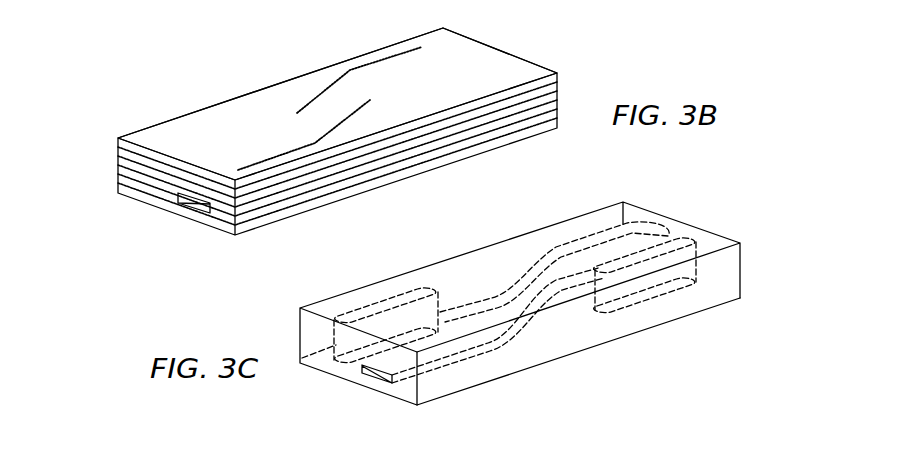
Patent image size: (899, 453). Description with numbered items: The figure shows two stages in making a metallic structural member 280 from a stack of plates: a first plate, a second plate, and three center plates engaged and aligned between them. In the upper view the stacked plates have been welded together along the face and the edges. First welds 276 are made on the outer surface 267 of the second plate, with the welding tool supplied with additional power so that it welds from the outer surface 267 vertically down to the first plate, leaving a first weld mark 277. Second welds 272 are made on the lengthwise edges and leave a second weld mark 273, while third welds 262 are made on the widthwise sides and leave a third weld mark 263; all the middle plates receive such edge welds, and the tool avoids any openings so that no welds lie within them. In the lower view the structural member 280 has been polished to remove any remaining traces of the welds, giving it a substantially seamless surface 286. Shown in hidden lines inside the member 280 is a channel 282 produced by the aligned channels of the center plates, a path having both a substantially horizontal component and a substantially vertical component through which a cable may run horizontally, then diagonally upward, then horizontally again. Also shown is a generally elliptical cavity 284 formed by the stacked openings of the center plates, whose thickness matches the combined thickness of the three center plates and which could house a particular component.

In FIG. 3B, the third welds 262 is at (298, 125).
In FIG. 3B, the third weld mark 263 is at (160, 185).
In FIG. 3B, the outer surface 267 is at (403, 97).
In FIG. 3B, the second welds 272 is at (337, 153).
In FIG. 3B, the second weld mark 273 is at (420, 150).
In FIG. 3B, the first welds 276 is at (330, 91).
In FIG. 3B, the first weld mark 277 is at (398, 55).
In FIG. 3C, the structural member 280 is at (533, 290).
In FIG. 3C, the channel 282 is at (630, 219).
In FIG. 3C, the cavity 284 is at (657, 294).
In FIG. 3C, the seamless surface 286 is at (562, 330).